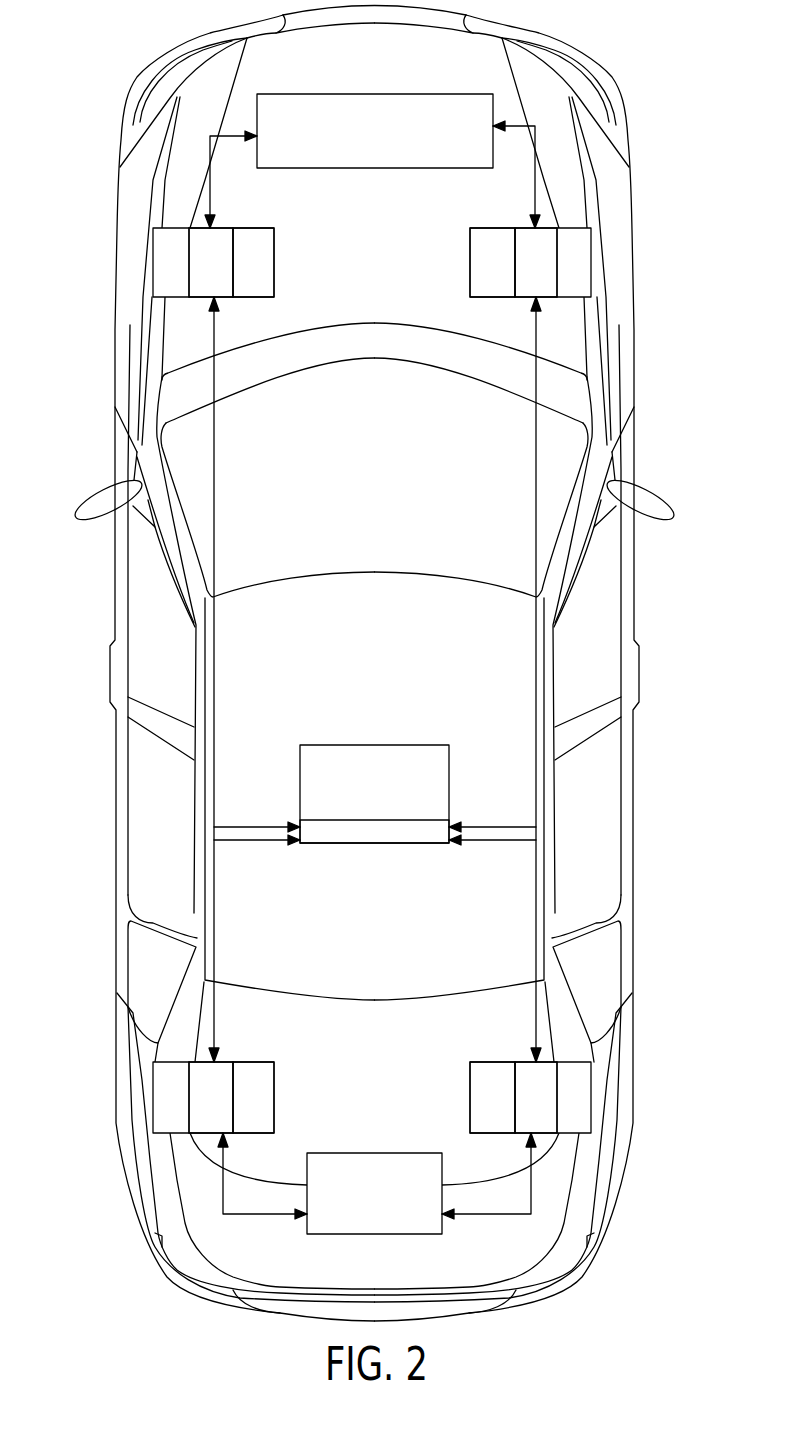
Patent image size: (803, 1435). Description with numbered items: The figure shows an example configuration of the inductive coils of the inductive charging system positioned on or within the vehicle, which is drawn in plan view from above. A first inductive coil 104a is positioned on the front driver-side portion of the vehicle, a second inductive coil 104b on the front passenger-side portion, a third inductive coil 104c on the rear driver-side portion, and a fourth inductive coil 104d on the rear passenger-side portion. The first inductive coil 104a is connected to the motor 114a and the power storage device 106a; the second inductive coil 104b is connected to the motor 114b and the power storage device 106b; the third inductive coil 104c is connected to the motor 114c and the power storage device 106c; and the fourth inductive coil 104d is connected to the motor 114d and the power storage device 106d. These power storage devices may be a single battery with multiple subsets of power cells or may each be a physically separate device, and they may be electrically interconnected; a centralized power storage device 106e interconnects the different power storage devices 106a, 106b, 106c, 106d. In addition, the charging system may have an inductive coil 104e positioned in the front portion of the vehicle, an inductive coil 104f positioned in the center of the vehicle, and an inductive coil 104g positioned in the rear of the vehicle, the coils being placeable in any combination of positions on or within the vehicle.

The first inductive coil 104a is at (167, 271).
The second inductive coil 104b is at (580, 282).
The third inductive coil 104c is at (172, 1108).
The fourth inductive coil 104d is at (577, 1115).
The inductive coil 104e is at (360, 94).
The inductive coil 104f is at (318, 745).
The inductive coil 104g is at (392, 1153).
The power storage device 106a is at (207, 298).
The power storage device 106b is at (533, 283).
The power storage device 106c is at (210, 1133).
The power storage device 106d is at (543, 1133).
The centralized power storage device 106e is at (400, 845).
The motor 114a is at (257, 238).
The motor 114b is at (488, 236).
The motor 114c is at (265, 1070).
The motor 114d is at (483, 1070).